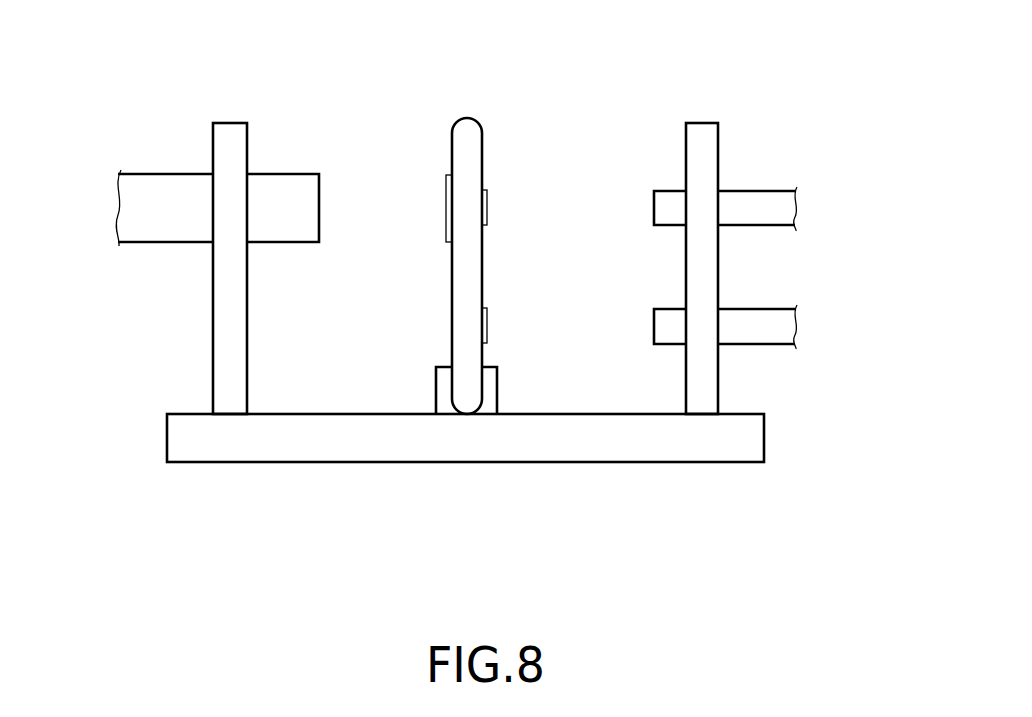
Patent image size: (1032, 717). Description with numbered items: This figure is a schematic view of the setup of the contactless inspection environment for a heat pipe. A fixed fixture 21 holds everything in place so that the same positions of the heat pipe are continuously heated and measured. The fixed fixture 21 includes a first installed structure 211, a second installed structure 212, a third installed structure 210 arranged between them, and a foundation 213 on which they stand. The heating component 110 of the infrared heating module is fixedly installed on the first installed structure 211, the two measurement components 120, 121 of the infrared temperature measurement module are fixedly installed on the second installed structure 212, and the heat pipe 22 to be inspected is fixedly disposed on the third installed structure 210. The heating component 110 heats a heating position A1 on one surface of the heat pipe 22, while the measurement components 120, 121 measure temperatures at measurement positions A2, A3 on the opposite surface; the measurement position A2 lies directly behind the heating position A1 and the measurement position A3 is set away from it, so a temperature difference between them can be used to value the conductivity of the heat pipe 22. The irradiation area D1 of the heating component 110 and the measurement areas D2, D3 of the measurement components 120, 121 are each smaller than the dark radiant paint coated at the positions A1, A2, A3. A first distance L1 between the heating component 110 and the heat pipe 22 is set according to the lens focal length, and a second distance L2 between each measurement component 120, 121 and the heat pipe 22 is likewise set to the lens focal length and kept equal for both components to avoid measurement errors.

The fixed fixture 21 is at (465, 292).
The third installed structure 210 is at (493, 392).
The first installed structure 211 is at (230, 132).
The second installed structure 212 is at (698, 140).
The foundation 213 is at (642, 443).
The heat pipe 22 is at (488, 128).
The heating component 110 is at (167, 192).
The measurement component 120 is at (753, 202).
The measurement component 121 is at (758, 317).
The heating position A1 is at (446, 192).
The measurement position A2 is at (488, 197).
The measurement position A3 is at (488, 313).
The laser irradiation area D1 is at (118, 242).
The measurement area D2 is at (795, 191).
The measurement area D3 is at (795, 309).
The first distance L1 is at (444, 208).
The second distance L2 is at (652, 208).